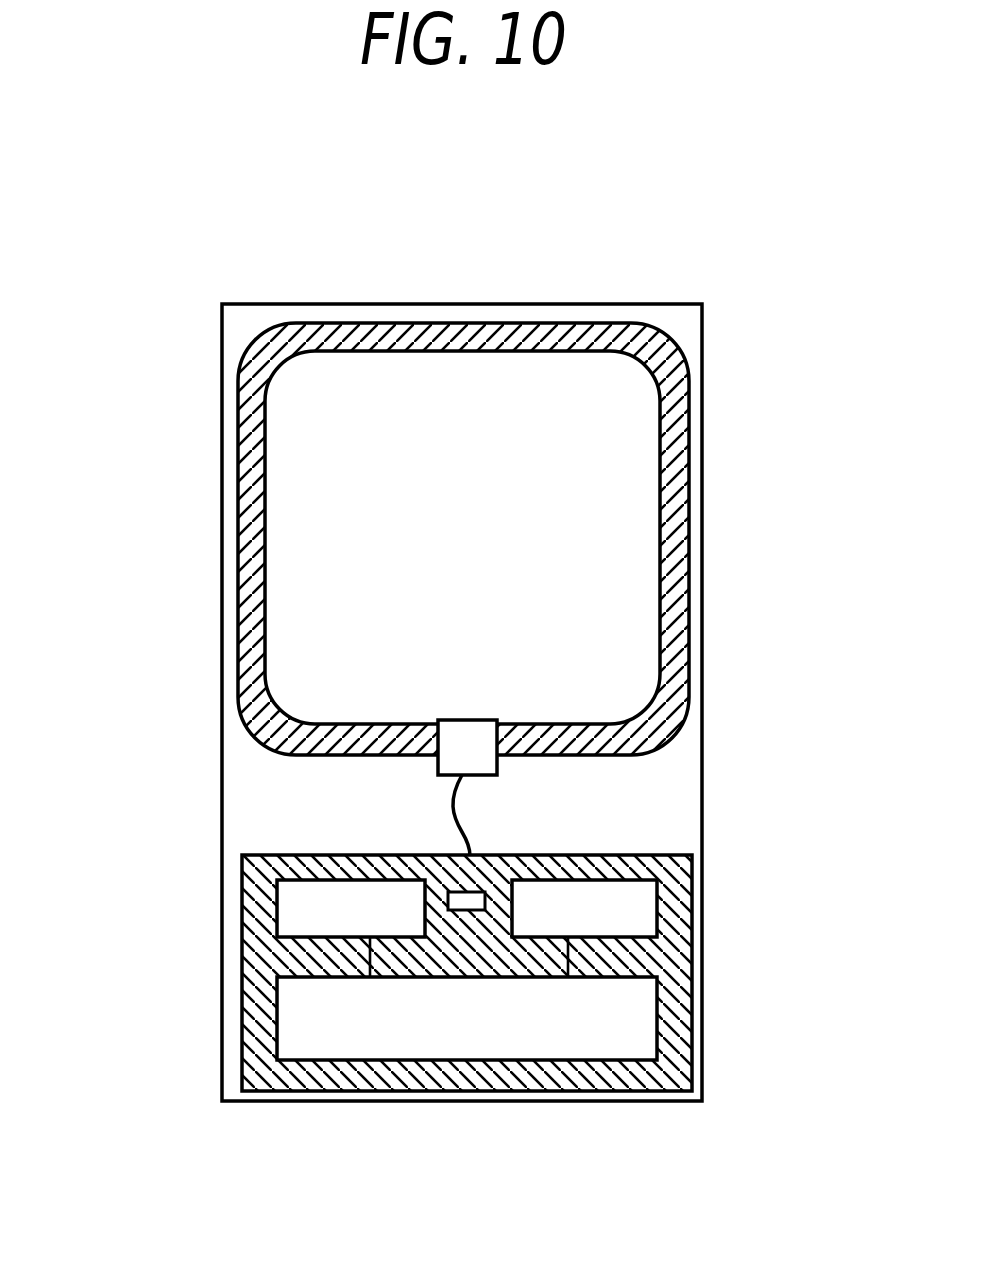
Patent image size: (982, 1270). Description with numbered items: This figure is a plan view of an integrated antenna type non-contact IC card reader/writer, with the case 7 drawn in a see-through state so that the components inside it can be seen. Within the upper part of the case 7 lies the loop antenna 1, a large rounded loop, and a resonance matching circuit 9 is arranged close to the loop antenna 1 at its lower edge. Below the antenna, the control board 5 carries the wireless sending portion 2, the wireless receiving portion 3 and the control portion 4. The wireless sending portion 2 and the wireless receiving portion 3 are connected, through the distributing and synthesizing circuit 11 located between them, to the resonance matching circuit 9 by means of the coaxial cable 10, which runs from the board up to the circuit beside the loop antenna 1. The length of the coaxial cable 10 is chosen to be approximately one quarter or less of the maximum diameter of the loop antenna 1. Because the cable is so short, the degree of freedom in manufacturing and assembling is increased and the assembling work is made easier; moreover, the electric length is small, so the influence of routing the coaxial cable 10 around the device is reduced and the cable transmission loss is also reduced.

The loop antenna 1 is at (480, 330).
The wireless sending portion 2 is at (318, 900).
The wireless receiving portion 3 is at (600, 894).
The control portion 4 is at (345, 1012).
The control board 5 is at (382, 1083).
The case 7 is at (237, 327).
The resonance matching circuit 9 is at (480, 733).
The coaxial cable 10 is at (468, 817).
The distributing and synthesizing circuit 11 is at (445, 890).